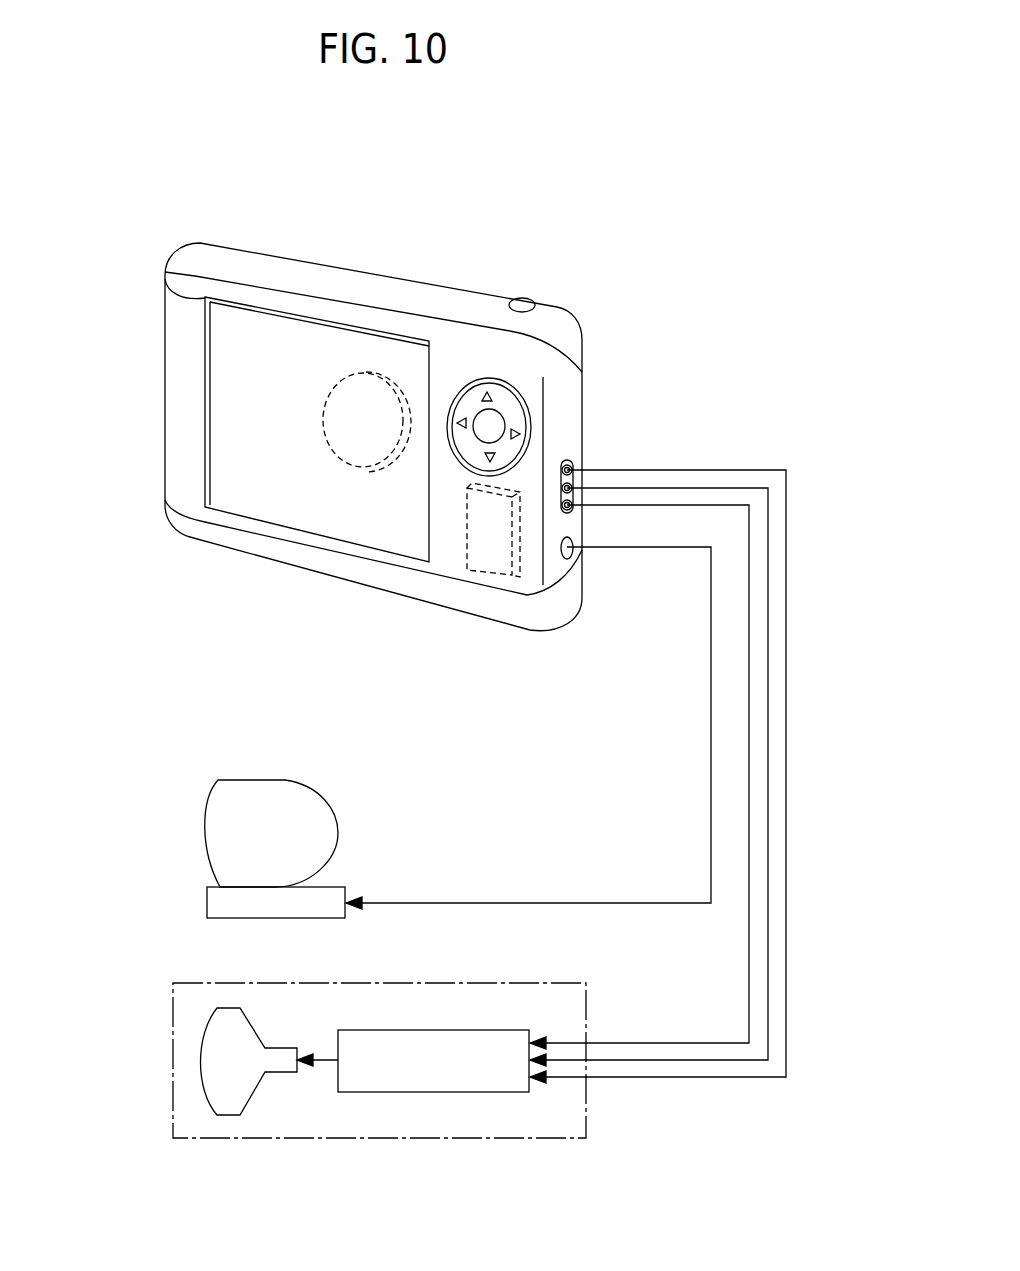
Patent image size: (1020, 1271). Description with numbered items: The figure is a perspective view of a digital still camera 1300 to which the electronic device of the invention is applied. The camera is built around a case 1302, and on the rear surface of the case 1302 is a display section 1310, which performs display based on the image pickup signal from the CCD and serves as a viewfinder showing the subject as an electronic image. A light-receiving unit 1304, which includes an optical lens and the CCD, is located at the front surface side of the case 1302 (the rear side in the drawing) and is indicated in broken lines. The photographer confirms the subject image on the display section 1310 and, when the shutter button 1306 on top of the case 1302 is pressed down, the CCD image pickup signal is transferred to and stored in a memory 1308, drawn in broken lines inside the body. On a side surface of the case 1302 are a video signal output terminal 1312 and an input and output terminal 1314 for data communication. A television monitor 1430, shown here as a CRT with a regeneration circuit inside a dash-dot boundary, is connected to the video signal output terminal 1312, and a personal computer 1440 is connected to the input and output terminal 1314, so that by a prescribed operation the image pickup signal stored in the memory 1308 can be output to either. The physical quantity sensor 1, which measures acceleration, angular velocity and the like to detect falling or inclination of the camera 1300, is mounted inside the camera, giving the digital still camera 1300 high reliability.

The physical quantity sensor 1 is at (453, 548).
The digital still camera 1300 is at (417, 410).
The case 1302 is at (188, 290).
The light-receiving unit 1304 is at (363, 373).
The shutter button 1306 is at (527, 299).
The memory 1308 is at (477, 570).
The display section 1310 is at (290, 485).
The video signal output terminal 1312 is at (573, 462).
The input and output terminal for data communication 1314 is at (572, 552).
The television monitor 1430 is at (173, 1050).
The personal computer 1440 is at (203, 821).